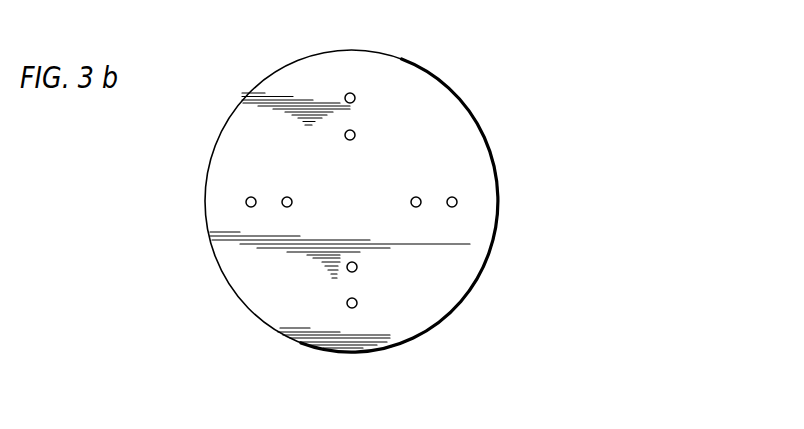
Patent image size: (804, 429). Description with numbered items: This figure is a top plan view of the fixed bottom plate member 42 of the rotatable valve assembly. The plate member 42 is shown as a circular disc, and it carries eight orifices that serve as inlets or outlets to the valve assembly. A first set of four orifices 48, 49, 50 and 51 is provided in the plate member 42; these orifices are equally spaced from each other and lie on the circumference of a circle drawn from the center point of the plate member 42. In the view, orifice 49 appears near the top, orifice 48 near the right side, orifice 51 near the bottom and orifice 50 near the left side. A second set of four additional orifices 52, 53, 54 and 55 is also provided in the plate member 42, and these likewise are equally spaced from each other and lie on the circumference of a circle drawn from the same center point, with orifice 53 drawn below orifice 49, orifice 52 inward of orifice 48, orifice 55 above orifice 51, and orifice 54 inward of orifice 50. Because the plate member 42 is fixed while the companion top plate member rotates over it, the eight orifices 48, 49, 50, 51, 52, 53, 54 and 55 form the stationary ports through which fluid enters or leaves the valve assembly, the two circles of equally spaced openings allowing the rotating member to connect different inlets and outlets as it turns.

The fixed bottom plate member 42 is at (492, 141).
The orifice 48 is at (458, 201).
The orifice 49 is at (352, 93).
The orifice 50 is at (246, 202).
The orifice 51 is at (352, 309).
The orifice 52 is at (420, 206).
The orifice 53 is at (356, 134).
The orifice 54 is at (288, 207).
The orifice 55 is at (358, 267).